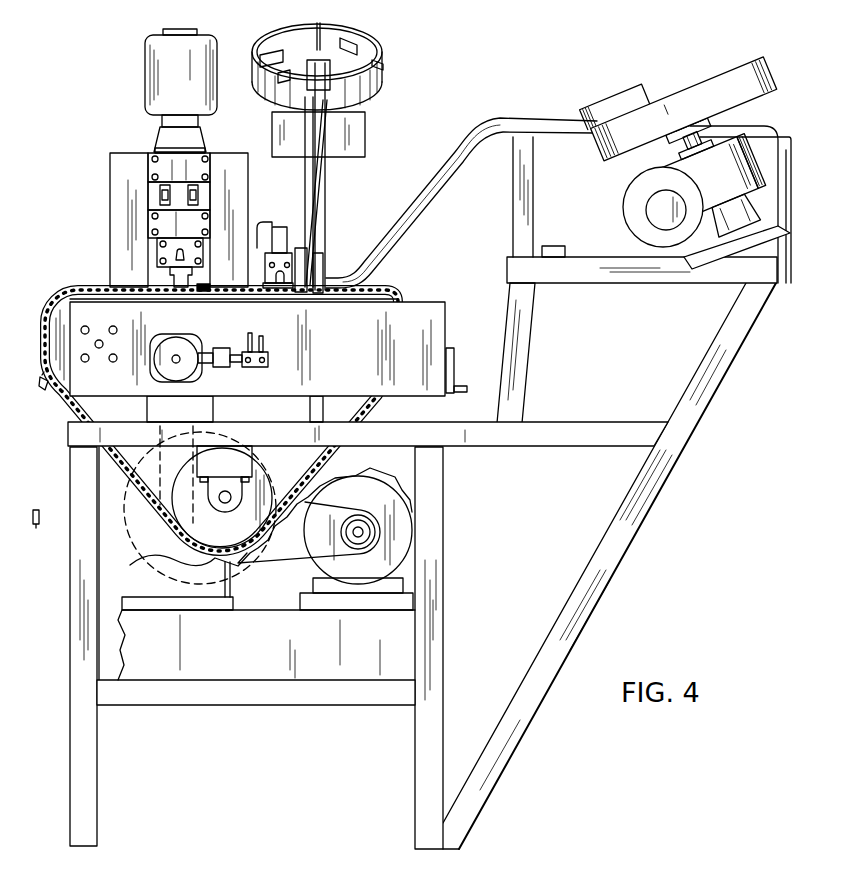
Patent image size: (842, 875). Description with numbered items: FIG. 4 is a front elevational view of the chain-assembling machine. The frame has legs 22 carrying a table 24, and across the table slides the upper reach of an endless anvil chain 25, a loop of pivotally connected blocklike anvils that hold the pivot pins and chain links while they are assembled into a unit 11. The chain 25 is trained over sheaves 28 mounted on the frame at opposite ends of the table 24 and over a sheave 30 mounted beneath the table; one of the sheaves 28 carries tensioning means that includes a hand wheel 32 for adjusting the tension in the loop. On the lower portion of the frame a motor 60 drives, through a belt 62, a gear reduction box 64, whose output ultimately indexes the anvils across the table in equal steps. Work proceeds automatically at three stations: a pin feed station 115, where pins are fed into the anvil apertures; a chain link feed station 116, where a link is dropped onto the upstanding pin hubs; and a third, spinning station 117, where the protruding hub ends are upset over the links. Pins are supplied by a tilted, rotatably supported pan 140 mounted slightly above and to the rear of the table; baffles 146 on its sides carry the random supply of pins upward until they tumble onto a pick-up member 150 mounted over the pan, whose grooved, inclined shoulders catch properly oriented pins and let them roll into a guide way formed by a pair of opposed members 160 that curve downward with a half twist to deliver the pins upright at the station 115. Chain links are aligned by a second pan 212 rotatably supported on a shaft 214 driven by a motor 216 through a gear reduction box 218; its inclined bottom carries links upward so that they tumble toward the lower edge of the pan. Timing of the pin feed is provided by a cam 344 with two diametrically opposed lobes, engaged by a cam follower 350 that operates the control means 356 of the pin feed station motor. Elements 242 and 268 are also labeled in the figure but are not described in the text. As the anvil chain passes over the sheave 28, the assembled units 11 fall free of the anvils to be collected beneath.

The unit 11 is at (47, 387).
The legs 22 is at (93, 803).
The table 24 is at (318, 304).
The anvil chain 25 is at (316, 462).
The sheaves 28 is at (55, 296).
The sheave 30 is at (237, 560).
The hand wheel 32 is at (458, 370).
The motor 60 is at (372, 497).
The belt 62 is at (300, 562).
The gear reduction box 64 is at (193, 590).
The pin feed station 115 is at (328, 246).
The chain link feed station 116 is at (280, 211).
The spinning station 117 is at (140, 144).
The pan 140 is at (374, 50).
The baffles 146 is at (308, 30).
The pick-up member 150 is at (303, 78).
The opposed members 160 is at (316, 228).
The pan 212 is at (703, 87).
The shaft 214 is at (716, 140).
The motor 216 is at (630, 193).
The gear reduction box 218 is at (660, 207).
The support tube 242 is at (488, 117).
The supply container 268 is at (160, 60).
The cam 344 is at (181, 337).
The cam follower 350 is at (220, 348).
The control means 356 is at (266, 365).